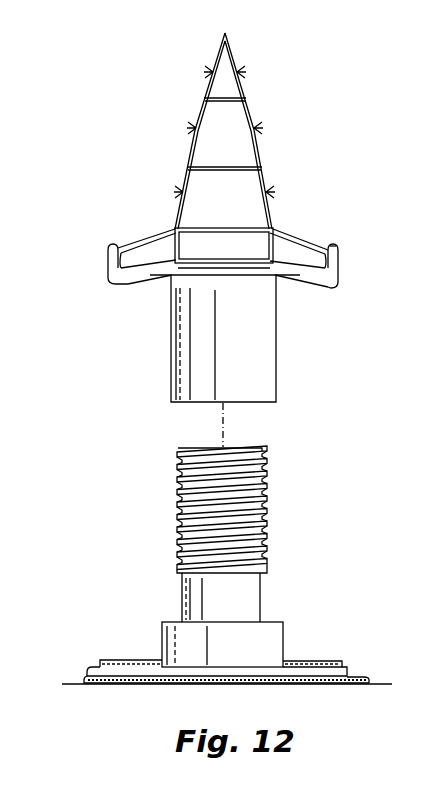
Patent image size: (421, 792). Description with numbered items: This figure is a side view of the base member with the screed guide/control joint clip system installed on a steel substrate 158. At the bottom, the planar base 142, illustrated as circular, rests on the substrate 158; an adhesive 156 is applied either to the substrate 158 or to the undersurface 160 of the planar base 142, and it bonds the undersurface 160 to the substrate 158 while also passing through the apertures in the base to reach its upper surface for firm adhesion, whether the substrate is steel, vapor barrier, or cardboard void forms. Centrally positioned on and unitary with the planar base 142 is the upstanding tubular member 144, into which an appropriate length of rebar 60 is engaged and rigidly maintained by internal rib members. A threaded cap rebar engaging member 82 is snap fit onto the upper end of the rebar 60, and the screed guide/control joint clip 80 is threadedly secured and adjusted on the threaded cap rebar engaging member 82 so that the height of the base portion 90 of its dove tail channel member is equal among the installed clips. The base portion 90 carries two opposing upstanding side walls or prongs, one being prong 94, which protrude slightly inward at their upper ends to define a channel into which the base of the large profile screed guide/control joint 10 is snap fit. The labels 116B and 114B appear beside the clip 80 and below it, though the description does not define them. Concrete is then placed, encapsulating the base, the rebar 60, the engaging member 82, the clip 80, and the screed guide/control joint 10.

The screed guide/control joint 10 is at (280, 145).
The base portion 90 is at (126, 287).
The upstanding side wall or prong 94 is at (340, 270).
The upper region 116B is at (375, 260).
The screed guide/control joint clip 80 is at (290, 342).
The lower region 114B is at (322, 424).
The threaded cap rebar engaging member 82 is at (264, 498).
The rebar 60 is at (262, 592).
The upstanding tubular member 144 is at (284, 627).
The planar base 142 is at (96, 660).
The adhesive 156 is at (318, 660).
The undersurface 160 is at (348, 676).
The substrate 158 is at (235, 705).